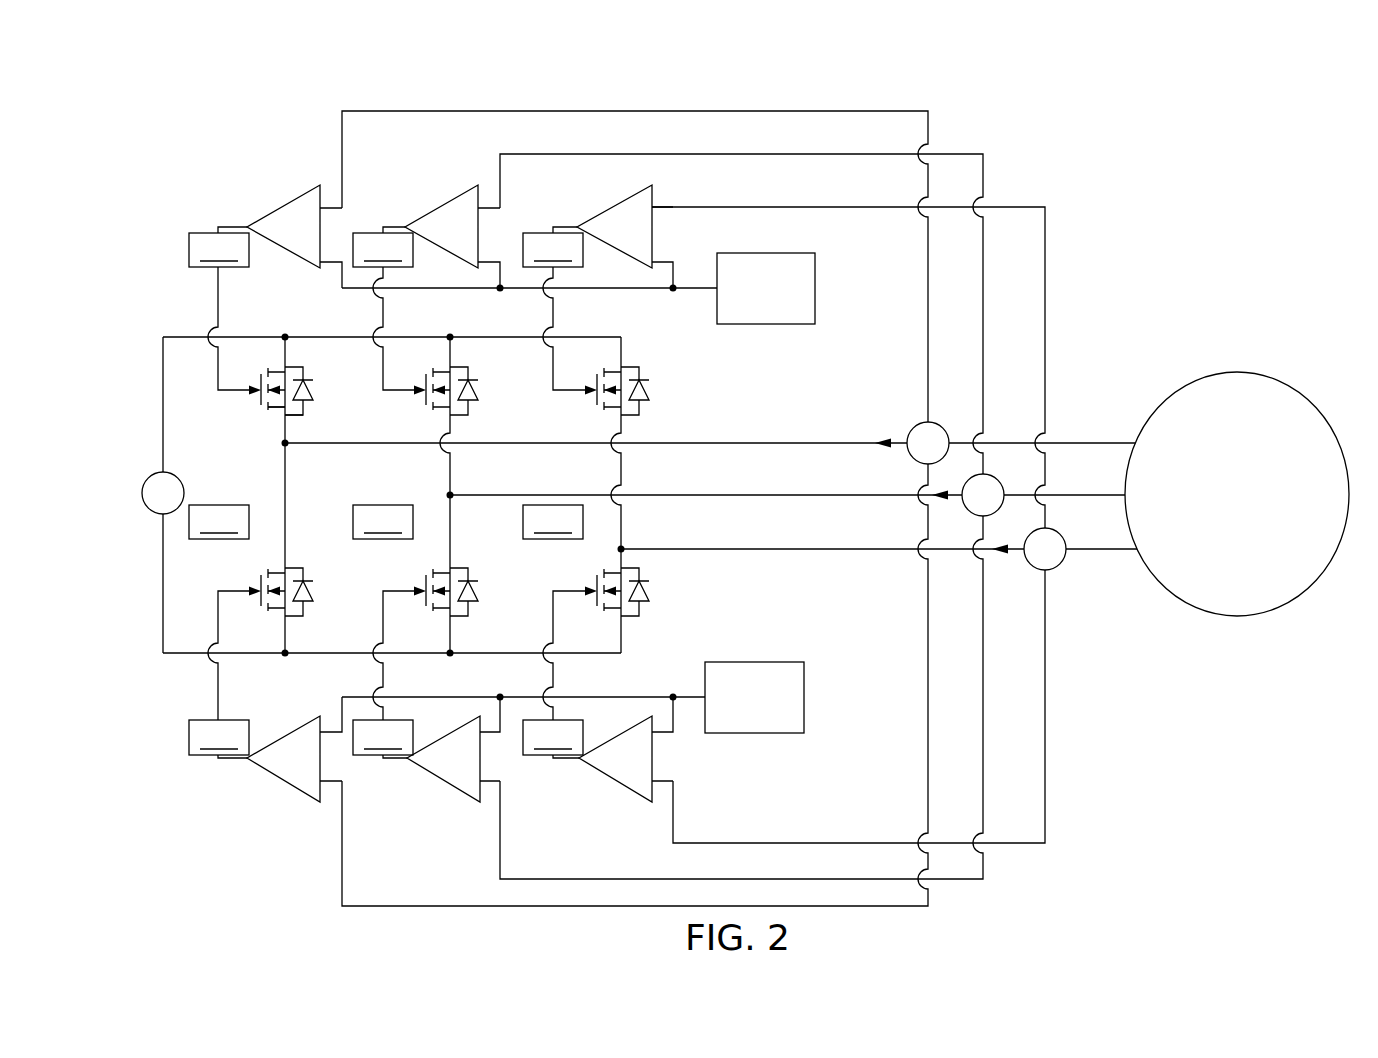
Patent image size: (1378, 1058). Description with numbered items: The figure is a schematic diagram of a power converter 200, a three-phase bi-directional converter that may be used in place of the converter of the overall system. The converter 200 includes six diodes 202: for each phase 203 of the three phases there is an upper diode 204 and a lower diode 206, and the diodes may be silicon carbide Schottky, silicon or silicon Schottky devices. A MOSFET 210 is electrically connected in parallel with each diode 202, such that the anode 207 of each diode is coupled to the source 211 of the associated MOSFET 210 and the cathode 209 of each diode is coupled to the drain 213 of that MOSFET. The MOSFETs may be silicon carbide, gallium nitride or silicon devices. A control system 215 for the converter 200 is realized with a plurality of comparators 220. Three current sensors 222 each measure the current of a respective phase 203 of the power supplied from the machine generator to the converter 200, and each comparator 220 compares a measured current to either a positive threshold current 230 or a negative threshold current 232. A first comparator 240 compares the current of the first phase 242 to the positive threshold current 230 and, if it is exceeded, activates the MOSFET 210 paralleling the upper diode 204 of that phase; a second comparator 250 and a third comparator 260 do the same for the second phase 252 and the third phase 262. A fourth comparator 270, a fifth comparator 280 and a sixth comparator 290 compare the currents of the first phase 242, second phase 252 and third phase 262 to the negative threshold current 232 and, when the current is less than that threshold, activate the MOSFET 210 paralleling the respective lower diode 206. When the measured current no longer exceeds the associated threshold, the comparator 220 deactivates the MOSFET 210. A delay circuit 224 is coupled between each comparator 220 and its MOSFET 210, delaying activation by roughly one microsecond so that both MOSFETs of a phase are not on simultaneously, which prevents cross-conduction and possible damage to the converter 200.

The power converter 200 is at (794, 77).
The control system 215 is at (348, 98).
The comparator 220 is at (297, 194).
The first comparator 240 is at (264, 214).
The second comparator 250 is at (422, 214).
The third comparator 260 is at (592, 218).
The fourth comparator 270 is at (252, 766).
The fifth comparator 280 is at (412, 766).
The sixth comparator 290 is at (585, 766).
The delay circuit 224 is at (386, 492).
The positive threshold current 230 is at (817, 286).
The negative threshold current 232 is at (806, 697).
The drain 213 is at (262, 336).
The cathode 209 is at (317, 322).
The diode 202 is at (318, 392).
The upper diode 204 is at (312, 404).
The lower diode 206 is at (314, 606).
The anode 207 is at (294, 417).
The MOSFET 210 is at (258, 408).
The source 211 is at (275, 414).
The current sensor 222 is at (912, 428).
The phase 203 is at (782, 441).
The first phase 242 is at (722, 441).
The second phase 252 is at (662, 493).
The third phase 262 is at (680, 547).